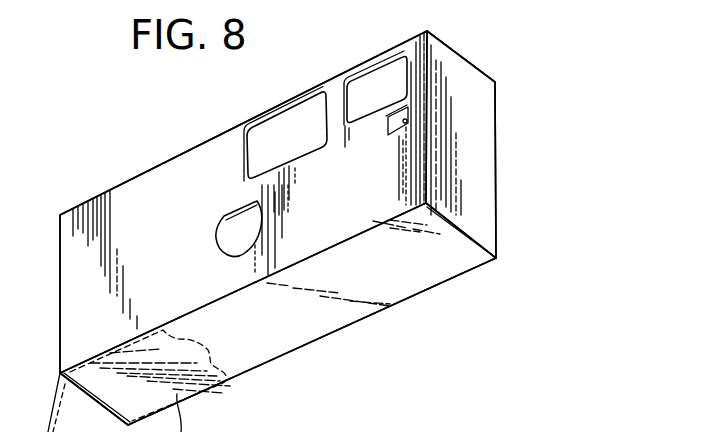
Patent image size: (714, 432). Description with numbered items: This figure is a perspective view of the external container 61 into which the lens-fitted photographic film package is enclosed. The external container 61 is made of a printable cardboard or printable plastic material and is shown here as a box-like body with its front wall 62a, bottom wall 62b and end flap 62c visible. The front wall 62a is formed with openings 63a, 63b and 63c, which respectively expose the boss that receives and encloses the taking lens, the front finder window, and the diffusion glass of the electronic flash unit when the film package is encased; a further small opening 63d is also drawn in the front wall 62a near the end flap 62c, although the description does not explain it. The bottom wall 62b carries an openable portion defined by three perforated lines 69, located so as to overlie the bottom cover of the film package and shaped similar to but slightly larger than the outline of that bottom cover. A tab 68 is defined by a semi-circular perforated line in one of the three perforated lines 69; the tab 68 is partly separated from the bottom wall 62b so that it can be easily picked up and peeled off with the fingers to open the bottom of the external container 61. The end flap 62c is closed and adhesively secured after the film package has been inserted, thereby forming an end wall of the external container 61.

The external container 61 is at (152, 158).
The front wall 62a is at (94, 202).
The bottom wall 62b is at (415, 281).
The end flap 62c is at (488, 163).
The opening 63a is at (252, 225).
The opening 63b is at (278, 111).
The opening 63c is at (383, 80).
The small opening 63d is at (413, 120).
The tab 68 is at (200, 353).
The perforated lines 69 is at (233, 385).